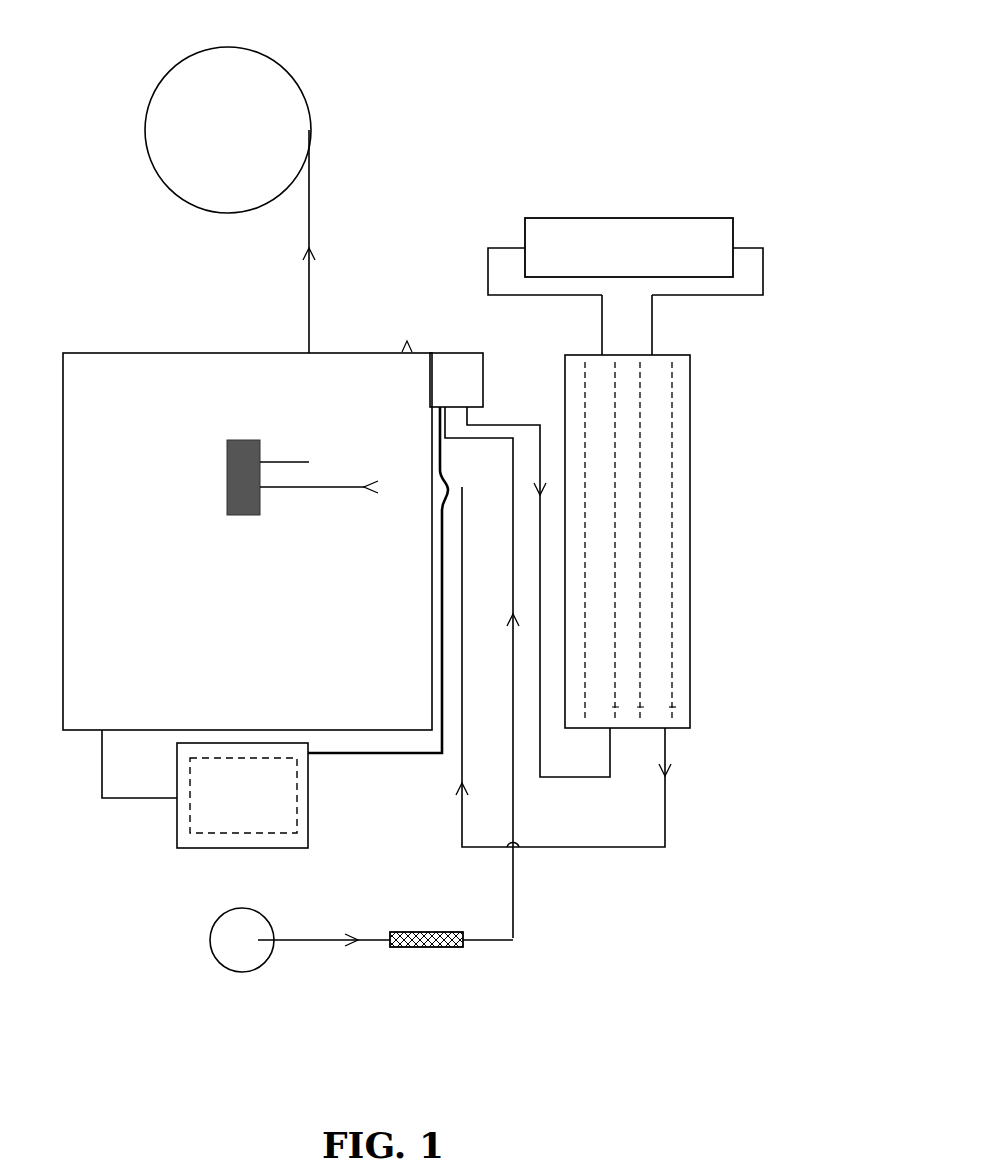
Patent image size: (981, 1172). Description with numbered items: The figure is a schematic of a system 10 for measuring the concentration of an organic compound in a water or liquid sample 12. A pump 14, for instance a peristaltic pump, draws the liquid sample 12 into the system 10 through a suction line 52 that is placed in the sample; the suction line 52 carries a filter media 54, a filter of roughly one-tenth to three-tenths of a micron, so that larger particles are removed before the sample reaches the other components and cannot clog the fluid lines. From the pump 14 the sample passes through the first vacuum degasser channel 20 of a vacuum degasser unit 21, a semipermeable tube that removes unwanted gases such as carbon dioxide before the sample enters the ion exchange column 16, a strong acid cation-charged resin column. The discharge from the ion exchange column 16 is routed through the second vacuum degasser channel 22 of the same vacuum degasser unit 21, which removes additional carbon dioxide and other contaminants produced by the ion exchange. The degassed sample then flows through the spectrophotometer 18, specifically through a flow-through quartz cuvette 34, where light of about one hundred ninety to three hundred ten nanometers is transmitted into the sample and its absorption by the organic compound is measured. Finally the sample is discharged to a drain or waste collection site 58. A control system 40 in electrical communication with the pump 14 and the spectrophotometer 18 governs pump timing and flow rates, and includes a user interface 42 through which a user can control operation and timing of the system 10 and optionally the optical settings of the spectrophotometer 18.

The system 10 is at (712, 122).
The liquid sample 12 is at (232, 943).
The pump 14 is at (450, 366).
The ion exchange column 16 is at (548, 232).
The spectrophotometer 18 is at (90, 348).
The first vacuum degasser channel 20 is at (600, 396).
The vacuum degasser unit 21 is at (690, 475).
The second vacuum degasser channel 22 is at (670, 645).
The flow-through quartz cuvette 34 is at (235, 459).
The control system 40 is at (305, 845).
The user interface 42 is at (297, 773).
The suction line 52 is at (300, 936).
The filter media 54 is at (425, 950).
The drain or waste collection site 58 is at (283, 63).